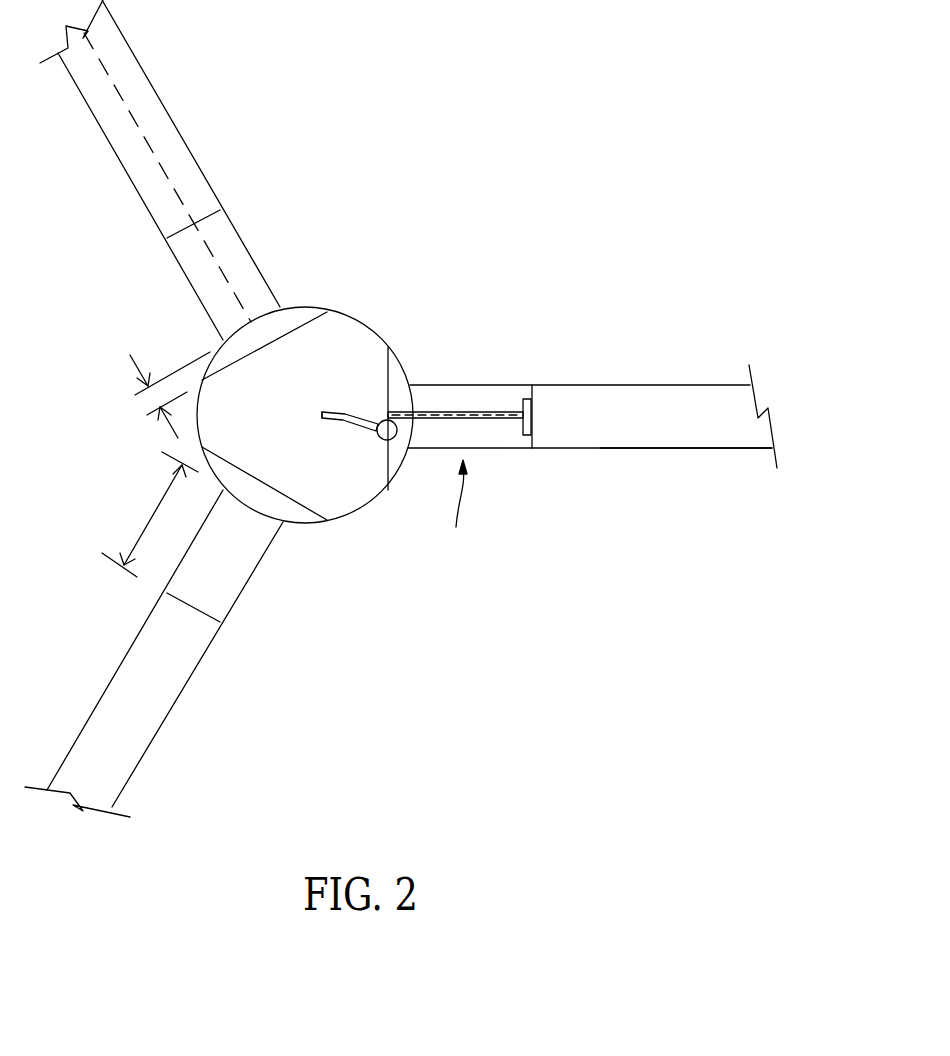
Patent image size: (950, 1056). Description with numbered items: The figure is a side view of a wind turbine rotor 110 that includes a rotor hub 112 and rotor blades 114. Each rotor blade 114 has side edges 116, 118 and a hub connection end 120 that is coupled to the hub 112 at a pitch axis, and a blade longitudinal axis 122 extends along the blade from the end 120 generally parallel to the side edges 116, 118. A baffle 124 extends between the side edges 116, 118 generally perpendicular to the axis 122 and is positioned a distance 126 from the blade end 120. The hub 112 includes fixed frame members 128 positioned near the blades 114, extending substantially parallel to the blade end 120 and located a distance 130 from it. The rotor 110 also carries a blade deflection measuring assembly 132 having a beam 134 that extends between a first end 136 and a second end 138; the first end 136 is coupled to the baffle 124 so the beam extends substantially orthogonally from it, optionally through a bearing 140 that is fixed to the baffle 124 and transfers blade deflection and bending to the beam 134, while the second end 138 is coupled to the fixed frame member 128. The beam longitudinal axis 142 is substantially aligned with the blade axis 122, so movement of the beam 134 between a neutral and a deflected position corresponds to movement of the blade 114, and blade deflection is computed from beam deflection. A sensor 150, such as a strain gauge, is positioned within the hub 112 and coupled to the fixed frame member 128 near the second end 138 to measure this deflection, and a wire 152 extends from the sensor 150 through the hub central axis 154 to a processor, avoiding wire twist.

The rotor 110 is at (552, 74).
The rotor hub 112 is at (350, 518).
The rotor blade 114 is at (123, 133).
The side edge 116 is at (623, 385).
The side edge 118 is at (685, 449).
The hub connection end 120 is at (411, 385).
The blade longitudinal axis 122 is at (123, 100).
The baffle 124 is at (193, 608).
The distance 126 is at (148, 513).
The fixed frame member 128 is at (243, 363).
The distance 130 is at (130, 357).
The blade deflection measuring assembly 132 is at (453, 511).
The beam 134 is at (456, 412).
The beam first end 136 is at (523, 413).
The beam second end 138 is at (387, 414).
The bearing 140 is at (523, 432).
The beam longitudinal axis 142 is at (428, 419).
The sensor 150 is at (385, 441).
The wire 152 is at (343, 427).
The hub central axis 154 is at (323, 410).